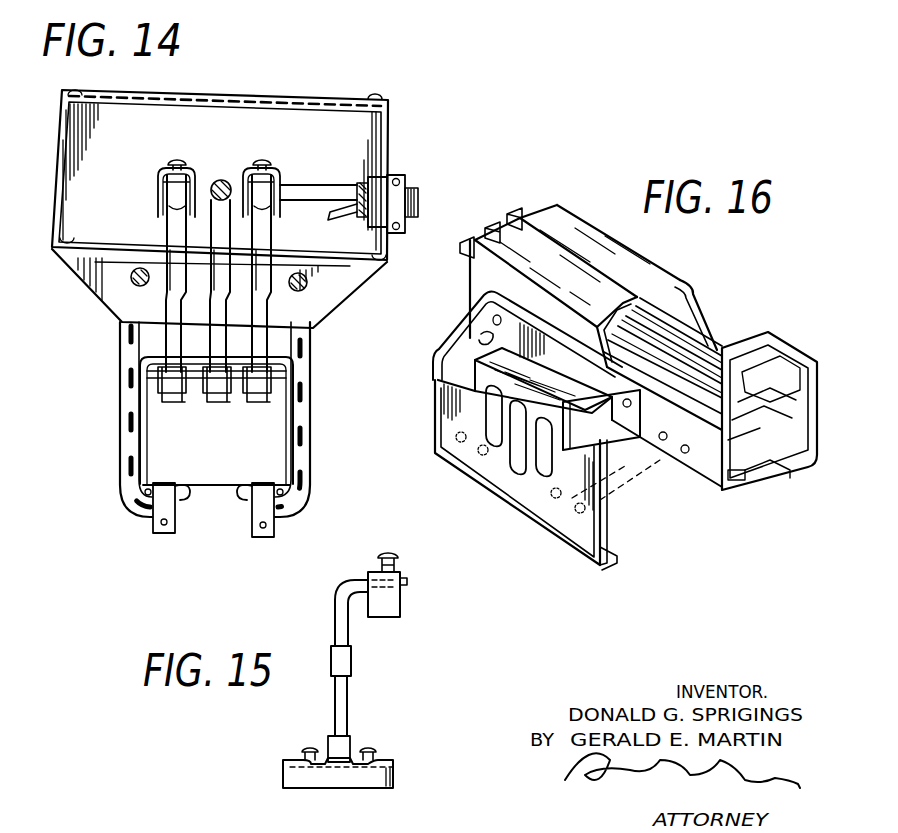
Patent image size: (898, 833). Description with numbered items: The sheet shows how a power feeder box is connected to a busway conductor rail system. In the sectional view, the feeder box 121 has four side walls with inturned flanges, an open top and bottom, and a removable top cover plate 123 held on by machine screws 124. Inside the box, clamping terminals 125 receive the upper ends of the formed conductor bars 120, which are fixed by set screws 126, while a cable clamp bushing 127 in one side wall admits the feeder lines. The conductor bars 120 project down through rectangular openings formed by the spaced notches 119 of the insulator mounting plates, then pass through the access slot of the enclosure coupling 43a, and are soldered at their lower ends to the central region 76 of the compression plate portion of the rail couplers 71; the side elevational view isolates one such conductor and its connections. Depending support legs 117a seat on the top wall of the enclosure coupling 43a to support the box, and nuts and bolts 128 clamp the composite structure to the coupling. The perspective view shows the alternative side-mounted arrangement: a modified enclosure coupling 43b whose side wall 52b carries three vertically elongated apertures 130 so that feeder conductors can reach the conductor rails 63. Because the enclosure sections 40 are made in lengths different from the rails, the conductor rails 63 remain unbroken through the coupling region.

In FIG. 14, the enclosure section 40 is at (143, 427).
In FIG. 16, the enclosure section 40 is at (572, 222).
In FIG. 14, the enclosure coupling 43a is at (133, 428).
In FIG. 16, the enclosure coupling 43b is at (440, 356).
In FIG. 16, the side wall 52b is at (455, 430).
In FIG. 16, the conductor rail 63 is at (703, 335).
In FIG. 14, the rail coupler 71 is at (228, 392).
In FIG. 15, the rail coupler 71 is at (290, 767).
In FIG. 15, the central region 76 is at (330, 760).
In FIG. 14, the support leg 117a is at (85, 288).
In FIG. 14, the rectangular notch 119 is at (168, 262).
In FIG. 14, the conductor bar 120 is at (274, 242).
In FIG. 15, the conductor bar 120 is at (340, 614).
In FIG. 14, the feeder box 121 is at (58, 193).
In FIG. 14, the top cover plate 123 is at (272, 100).
In FIG. 14, the machine screw 124 is at (378, 98).
In FIG. 14, the clamping terminal 125 is at (191, 170).
In FIG. 15, the clamping terminal 125 is at (386, 612).
In FIG. 14, the set screw 126 is at (273, 166).
In FIG. 15, the set screw 126 is at (392, 560).
In FIG. 14, the cable clamp bushing 127 is at (404, 190).
In FIG. 14, the nut and bolt 128 is at (132, 274).
In FIG. 16, the elongated aperture 130 is at (545, 475).